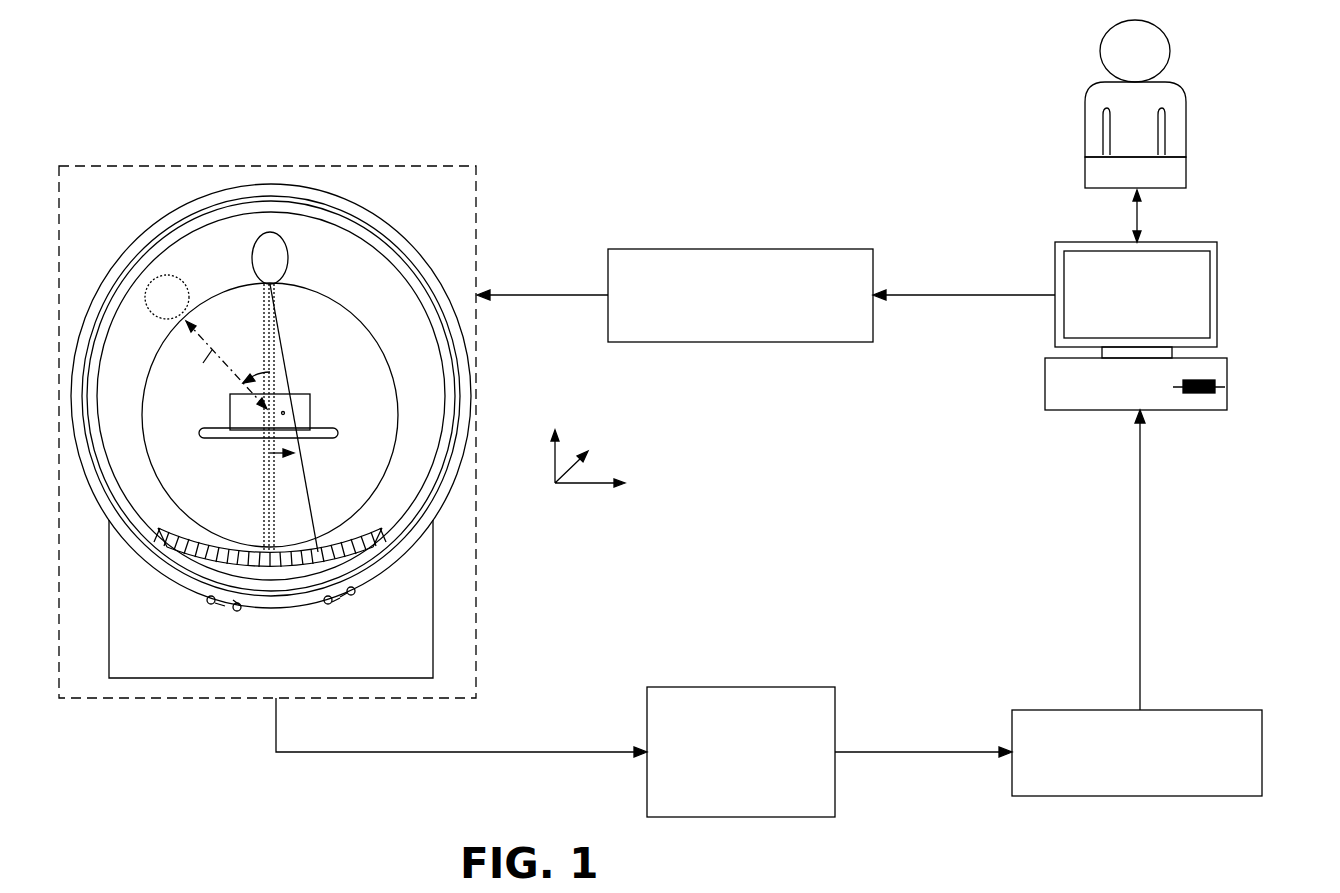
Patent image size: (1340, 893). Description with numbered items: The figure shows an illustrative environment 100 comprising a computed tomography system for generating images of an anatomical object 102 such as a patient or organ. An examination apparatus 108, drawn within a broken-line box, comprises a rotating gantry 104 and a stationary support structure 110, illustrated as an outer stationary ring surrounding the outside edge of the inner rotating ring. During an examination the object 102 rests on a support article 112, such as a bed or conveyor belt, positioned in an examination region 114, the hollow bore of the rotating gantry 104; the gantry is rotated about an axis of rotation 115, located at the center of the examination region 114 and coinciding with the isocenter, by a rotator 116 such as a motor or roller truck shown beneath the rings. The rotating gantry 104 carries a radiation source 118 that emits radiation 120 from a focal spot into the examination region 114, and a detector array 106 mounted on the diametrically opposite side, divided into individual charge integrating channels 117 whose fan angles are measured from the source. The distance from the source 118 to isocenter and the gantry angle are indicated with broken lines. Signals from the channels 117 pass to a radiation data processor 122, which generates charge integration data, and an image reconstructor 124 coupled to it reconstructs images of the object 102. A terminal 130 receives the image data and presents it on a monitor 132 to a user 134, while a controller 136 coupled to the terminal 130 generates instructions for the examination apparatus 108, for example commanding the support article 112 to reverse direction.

The environment 100 is at (150, 85).
The anatomical object 102 is at (286, 393).
The rotating gantry 104 is at (192, 238).
The detector array 106 is at (193, 560).
The examination apparatus 108 is at (477, 166).
The support structure 110 is at (368, 231).
The support article 112 is at (215, 428).
The examination region 114 is at (360, 481).
The axis of rotation 115 is at (284, 413).
The rotator 116 is at (357, 592).
The charge integrating channels 117 is at (372, 535).
The radiation source 118 is at (268, 284).
The radiation beams 120 is at (263, 515).
The radiation data processor 122 is at (740, 817).
The image reconstructor 124 is at (1262, 710).
The terminal 130 is at (1227, 358).
The monitor 132 is at (1217, 242).
The user 134 is at (1185, 98).
The controller 136 is at (742, 249).